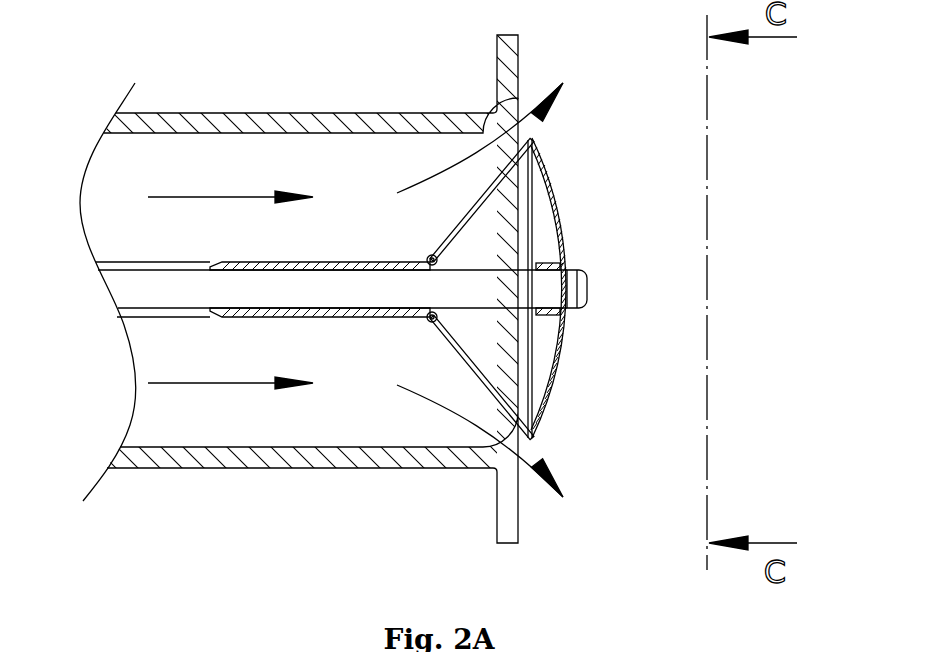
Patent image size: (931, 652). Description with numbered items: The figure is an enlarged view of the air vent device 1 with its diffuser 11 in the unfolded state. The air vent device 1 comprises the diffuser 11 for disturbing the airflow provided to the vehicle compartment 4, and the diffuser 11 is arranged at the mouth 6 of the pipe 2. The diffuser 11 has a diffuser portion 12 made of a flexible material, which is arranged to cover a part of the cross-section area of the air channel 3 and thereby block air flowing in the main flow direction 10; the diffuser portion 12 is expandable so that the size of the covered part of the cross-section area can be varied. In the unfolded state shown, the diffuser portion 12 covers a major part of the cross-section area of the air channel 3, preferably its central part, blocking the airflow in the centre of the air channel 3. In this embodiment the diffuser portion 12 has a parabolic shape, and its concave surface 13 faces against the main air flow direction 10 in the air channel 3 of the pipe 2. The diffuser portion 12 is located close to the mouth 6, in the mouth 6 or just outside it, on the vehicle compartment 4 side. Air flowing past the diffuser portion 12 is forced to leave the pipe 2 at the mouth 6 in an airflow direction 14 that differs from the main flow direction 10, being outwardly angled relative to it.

The air vent device 1 is at (510, 229).
The pipe 2 is at (270, 112).
The air channel 3 is at (362, 198).
The vehicle compartment 4 is at (622, 269).
The mouth 6 is at (497, 357).
The main flow direction 10 is at (213, 196).
The diffuser 11 is at (592, 378).
The diffuser portion 12 is at (556, 204).
The concave surface 13 is at (532, 220).
The airflow direction 14 is at (482, 158).